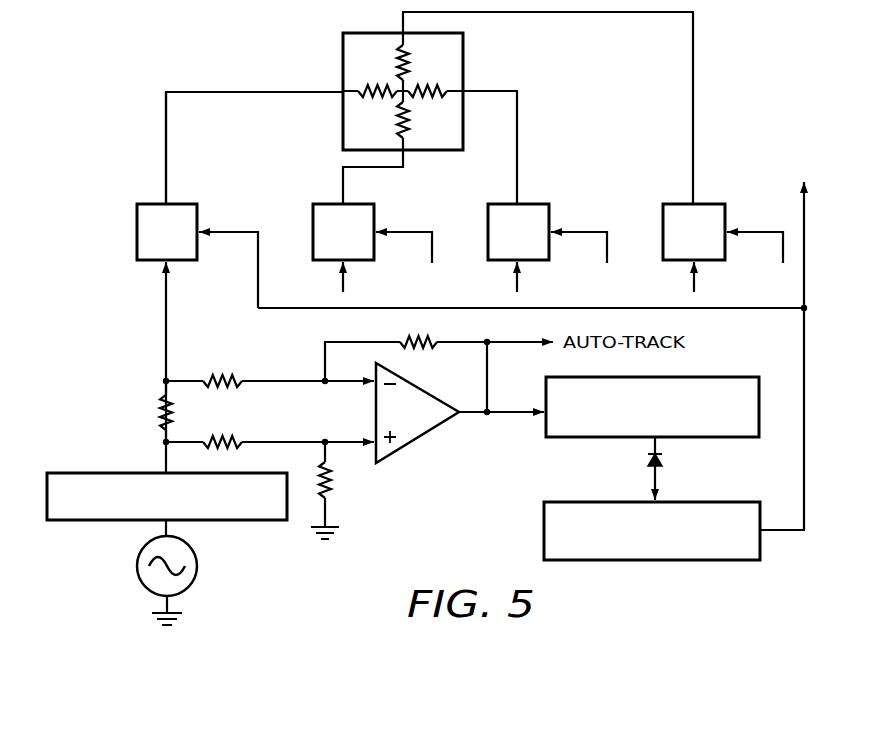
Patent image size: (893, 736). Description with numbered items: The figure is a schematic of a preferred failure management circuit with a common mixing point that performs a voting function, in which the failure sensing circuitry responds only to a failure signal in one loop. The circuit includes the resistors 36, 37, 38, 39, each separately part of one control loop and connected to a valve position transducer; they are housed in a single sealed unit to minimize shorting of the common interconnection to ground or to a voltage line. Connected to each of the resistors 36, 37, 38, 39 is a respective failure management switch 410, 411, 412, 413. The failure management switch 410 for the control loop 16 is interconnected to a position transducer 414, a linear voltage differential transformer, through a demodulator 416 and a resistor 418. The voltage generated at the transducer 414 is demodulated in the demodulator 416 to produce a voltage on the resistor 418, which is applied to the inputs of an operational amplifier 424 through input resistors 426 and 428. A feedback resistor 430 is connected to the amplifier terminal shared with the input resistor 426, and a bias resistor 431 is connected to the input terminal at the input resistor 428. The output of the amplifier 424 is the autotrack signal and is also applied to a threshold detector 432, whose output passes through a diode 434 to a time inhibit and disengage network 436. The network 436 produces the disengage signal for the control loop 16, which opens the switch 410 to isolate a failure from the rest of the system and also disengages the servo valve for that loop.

The control loop 16 is at (150, 106).
The resistor 36 is at (412, 60).
The resistor 37 is at (428, 97).
The resistor 38 is at (374, 88).
The resistor 39 is at (398, 107).
The failure management switch 410 is at (167, 232).
The failure management switch 411 is at (343, 232).
The failure management switch 412 is at (518, 232).
The failure management switch 413 is at (694, 232).
The position transducer 414 is at (189, 570).
The demodulator 416 is at (74, 486).
The resistor 418 is at (162, 412).
The operational amplifier 424 is at (417, 413).
The input resistor 426 is at (218, 375).
The input resistor 428 is at (230, 433).
The feedback resistor 430 is at (430, 342).
The bias resistor 431 is at (330, 487).
The threshold detector 432 is at (712, 378).
The diode 434 is at (664, 460).
The time inhibit and disengage network 436 is at (598, 500).